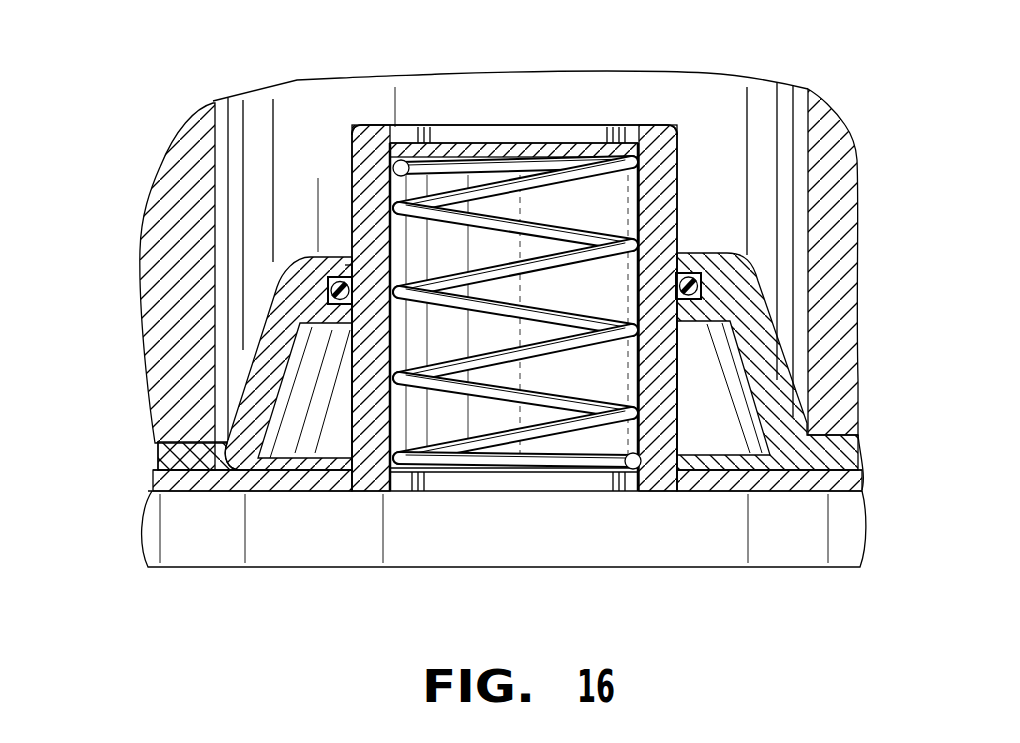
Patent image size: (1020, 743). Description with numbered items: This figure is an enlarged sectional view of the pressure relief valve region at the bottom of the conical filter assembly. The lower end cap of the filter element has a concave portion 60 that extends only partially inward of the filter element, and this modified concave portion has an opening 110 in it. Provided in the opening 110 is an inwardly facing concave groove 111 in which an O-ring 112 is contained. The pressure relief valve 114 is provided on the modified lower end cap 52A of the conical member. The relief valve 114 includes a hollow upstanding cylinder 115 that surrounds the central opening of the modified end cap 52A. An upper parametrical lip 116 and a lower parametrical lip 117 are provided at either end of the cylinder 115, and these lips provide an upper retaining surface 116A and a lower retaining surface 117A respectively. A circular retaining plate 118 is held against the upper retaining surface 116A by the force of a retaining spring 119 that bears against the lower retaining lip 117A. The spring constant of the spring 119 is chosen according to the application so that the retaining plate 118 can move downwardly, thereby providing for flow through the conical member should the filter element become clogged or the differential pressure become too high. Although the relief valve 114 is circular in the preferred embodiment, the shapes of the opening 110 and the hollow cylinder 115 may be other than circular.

The modified lower end cap 52A is at (740, 478).
The concave portion 60 is at (255, 382).
The opening 110 is at (602, 305).
The concave groove 111 is at (345, 282).
The O-ring 112 is at (342, 290).
The pressure relief valve 114 is at (676, 128).
The hollow upstanding cylinder 115 is at (668, 180).
The upper parametrical lip 116 is at (626, 150).
The upper retaining surface 116A is at (612, 152).
The lower parametrical lip 117 is at (630, 470).
The lower retaining surface 117A is at (575, 450).
The circular retaining plate 118 is at (500, 150).
The retaining spring 119 is at (482, 470).